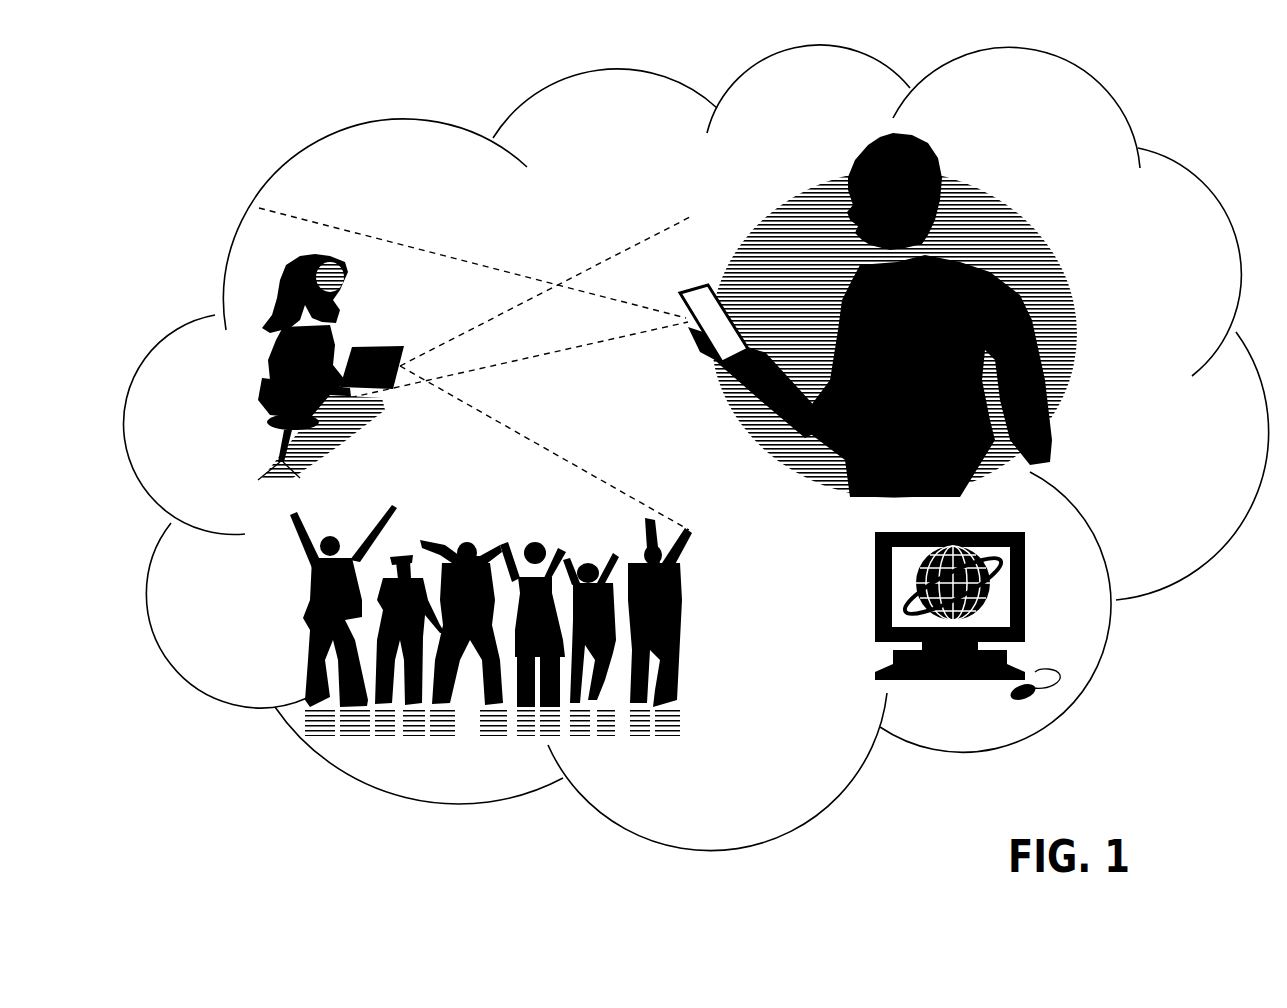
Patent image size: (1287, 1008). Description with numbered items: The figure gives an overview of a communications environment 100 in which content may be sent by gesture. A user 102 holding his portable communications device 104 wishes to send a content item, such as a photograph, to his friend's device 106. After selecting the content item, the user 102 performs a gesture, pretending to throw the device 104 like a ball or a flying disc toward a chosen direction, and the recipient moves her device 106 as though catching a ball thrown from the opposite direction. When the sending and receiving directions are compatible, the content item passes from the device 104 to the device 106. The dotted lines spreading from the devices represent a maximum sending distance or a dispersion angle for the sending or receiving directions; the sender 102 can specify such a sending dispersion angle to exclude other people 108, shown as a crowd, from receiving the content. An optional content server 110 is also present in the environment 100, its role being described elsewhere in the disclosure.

The communications environment 100 is at (1036, 100).
The user 102 is at (983, 253).
The portable communications device 104 is at (681, 340).
The friend's device 106 is at (393, 342).
The other people 108 is at (347, 520).
The content server 110 is at (967, 627).